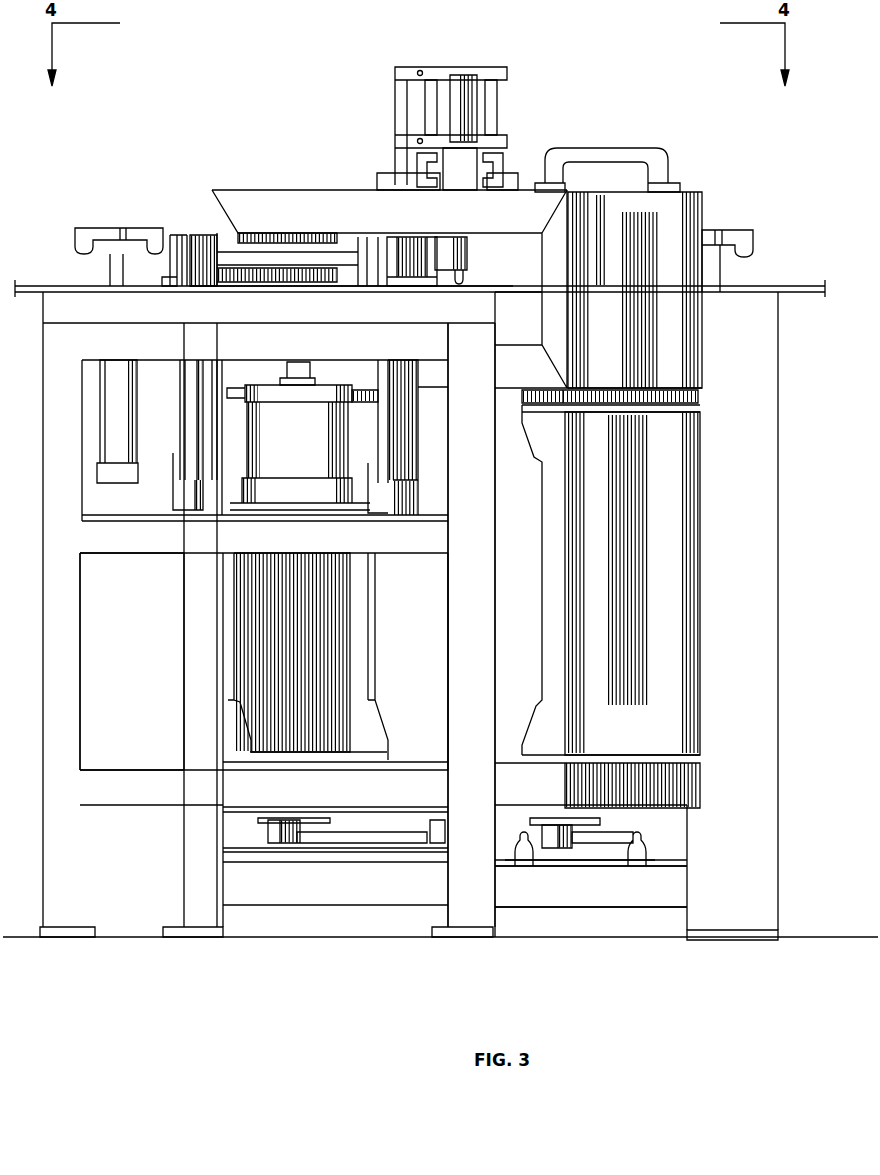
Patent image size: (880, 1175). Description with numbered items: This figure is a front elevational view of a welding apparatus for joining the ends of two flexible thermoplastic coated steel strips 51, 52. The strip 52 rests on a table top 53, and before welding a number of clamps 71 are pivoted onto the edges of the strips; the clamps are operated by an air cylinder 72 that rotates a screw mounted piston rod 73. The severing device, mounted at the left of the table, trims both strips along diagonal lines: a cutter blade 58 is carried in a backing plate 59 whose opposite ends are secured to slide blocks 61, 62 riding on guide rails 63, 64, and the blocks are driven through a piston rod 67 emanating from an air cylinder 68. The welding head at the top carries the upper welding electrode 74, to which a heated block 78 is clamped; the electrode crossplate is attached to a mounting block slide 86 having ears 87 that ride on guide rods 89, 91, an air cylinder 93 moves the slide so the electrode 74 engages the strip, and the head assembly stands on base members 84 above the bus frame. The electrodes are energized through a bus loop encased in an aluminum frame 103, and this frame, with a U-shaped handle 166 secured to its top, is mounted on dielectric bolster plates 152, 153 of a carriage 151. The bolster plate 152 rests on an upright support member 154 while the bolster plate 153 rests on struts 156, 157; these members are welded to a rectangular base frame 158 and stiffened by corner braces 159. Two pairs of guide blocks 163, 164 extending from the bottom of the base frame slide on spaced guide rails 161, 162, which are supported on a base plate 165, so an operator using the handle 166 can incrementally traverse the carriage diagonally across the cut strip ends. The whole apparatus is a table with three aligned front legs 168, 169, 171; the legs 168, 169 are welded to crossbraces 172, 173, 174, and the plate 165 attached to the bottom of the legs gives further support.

The flexible strip 51 is at (507, 283).
The flexible strip 52 is at (540, 296).
The table top 53 is at (95, 286).
The cutter blade 58 is at (240, 272).
The backing plate 59 is at (300, 258).
The slide block 61 is at (187, 272).
The slide block 62 is at (365, 277).
The guide rail 63 is at (200, 465).
The guide rail 64 is at (385, 437).
The piston rod 67 is at (300, 364).
The air cylinder 68 is at (303, 443).
The clamp 71 is at (142, 225).
The air cylinder 72 is at (130, 420).
The screw mounted piston rod 73 is at (124, 267).
The welding electrode 74 is at (463, 277).
The block 78 is at (467, 250).
The base plates 84 is at (500, 185).
The mounting block slide 86 is at (450, 153).
The ears 87 is at (425, 185).
The guide rod 89 is at (425, 96).
The guide rod 91 is at (498, 93).
The air cylinder 93 is at (455, 78).
The aluminum frame 103 is at (212, 192).
The carriage 151 is at (708, 566).
The bolster plate 152 is at (695, 397).
The bolster plate 153 is at (365, 385).
The upright support member 154 is at (697, 463).
The strut 156 is at (230, 623).
The strut 157 is at (375, 632).
The rectangular base frame 158 is at (692, 782).
The brace 159 is at (530, 460).
The guide rail 161 is at (520, 860).
The guide rail 162 is at (642, 838).
The guide block 163 is at (435, 843).
The guide block 164 is at (553, 848).
The base plate 165 is at (668, 880).
The U-shaped handle 166 is at (650, 150).
The front leg 168 is at (72, 667).
The front leg 169 is at (452, 667).
The front leg 171 is at (733, 930).
The crossbrace 172 is at (176, 355).
The crossbrace 173 is at (150, 548).
The crossbrace 174 is at (152, 770).